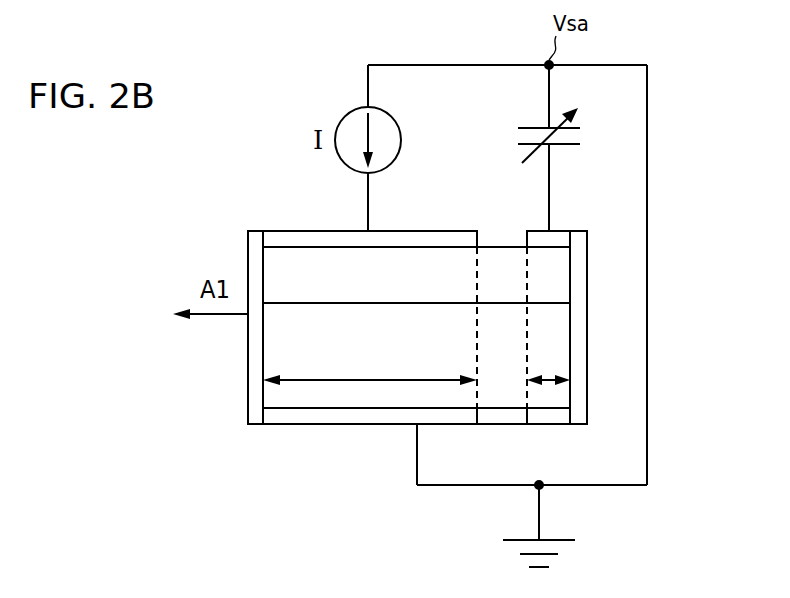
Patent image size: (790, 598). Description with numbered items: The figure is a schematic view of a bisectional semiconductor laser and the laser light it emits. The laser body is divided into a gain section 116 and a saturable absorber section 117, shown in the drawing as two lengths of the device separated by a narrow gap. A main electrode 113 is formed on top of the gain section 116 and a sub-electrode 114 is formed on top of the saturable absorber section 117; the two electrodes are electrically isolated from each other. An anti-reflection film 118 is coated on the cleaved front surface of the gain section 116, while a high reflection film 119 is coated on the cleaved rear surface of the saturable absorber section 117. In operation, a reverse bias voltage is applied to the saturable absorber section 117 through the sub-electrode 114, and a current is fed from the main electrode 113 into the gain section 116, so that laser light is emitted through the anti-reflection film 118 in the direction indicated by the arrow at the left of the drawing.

The main electrode 113 is at (300, 230).
The sub-electrode 114 is at (555, 240).
The gain section 116 is at (370, 364).
The saturable absorber section 117 is at (548, 364).
The anti-reflection film 118 is at (250, 400).
The high reflection film 119 is at (575, 395).